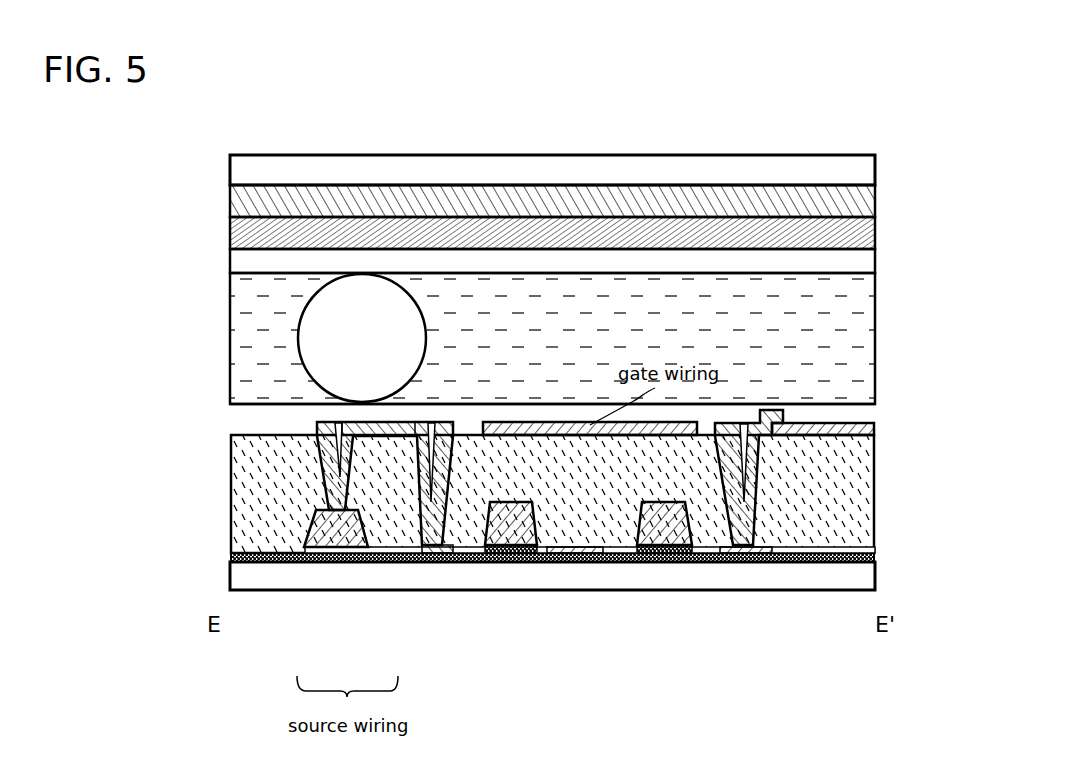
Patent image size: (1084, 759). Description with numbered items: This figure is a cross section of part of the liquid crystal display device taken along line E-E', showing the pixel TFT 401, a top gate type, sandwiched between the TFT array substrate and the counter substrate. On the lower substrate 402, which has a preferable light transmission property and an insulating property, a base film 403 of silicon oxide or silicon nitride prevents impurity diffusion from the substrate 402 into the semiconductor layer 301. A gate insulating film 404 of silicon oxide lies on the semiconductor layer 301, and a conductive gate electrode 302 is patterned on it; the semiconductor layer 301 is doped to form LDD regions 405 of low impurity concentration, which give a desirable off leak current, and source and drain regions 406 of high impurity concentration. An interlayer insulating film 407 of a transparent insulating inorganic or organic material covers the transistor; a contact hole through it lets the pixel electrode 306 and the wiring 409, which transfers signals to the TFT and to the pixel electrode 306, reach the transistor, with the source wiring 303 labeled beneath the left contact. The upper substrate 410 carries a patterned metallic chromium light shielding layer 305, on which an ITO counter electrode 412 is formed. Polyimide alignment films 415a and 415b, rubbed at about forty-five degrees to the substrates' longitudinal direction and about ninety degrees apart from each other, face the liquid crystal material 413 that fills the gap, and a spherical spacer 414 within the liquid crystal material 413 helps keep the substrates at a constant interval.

The substrate 410 is at (245, 175).
The light shielding layer 305 is at (240, 201).
The counter electrode 412 is at (245, 242).
The alignment film 415a is at (763, 260).
The liquid crystal material 413 is at (248, 324).
The spacer 414 is at (402, 351).
The alignment film 415b is at (663, 410).
The wiring 409 is at (432, 414).
The pixel electrode 306 is at (873, 420).
The interlayer insulating film 407 is at (250, 483).
The base film 403 is at (253, 559).
The substrate 402 is at (252, 580).
The pixel TFT 401 is at (772, 676).
The semiconductor layer 301 is at (508, 548).
The gate electrode 302 is at (665, 520).
The LDD regions 405 is at (600, 548).
The gate insulating film 404 is at (675, 535).
The source wiring 303 is at (338, 528).
The source (and drain) regions 406 is at (432, 550).